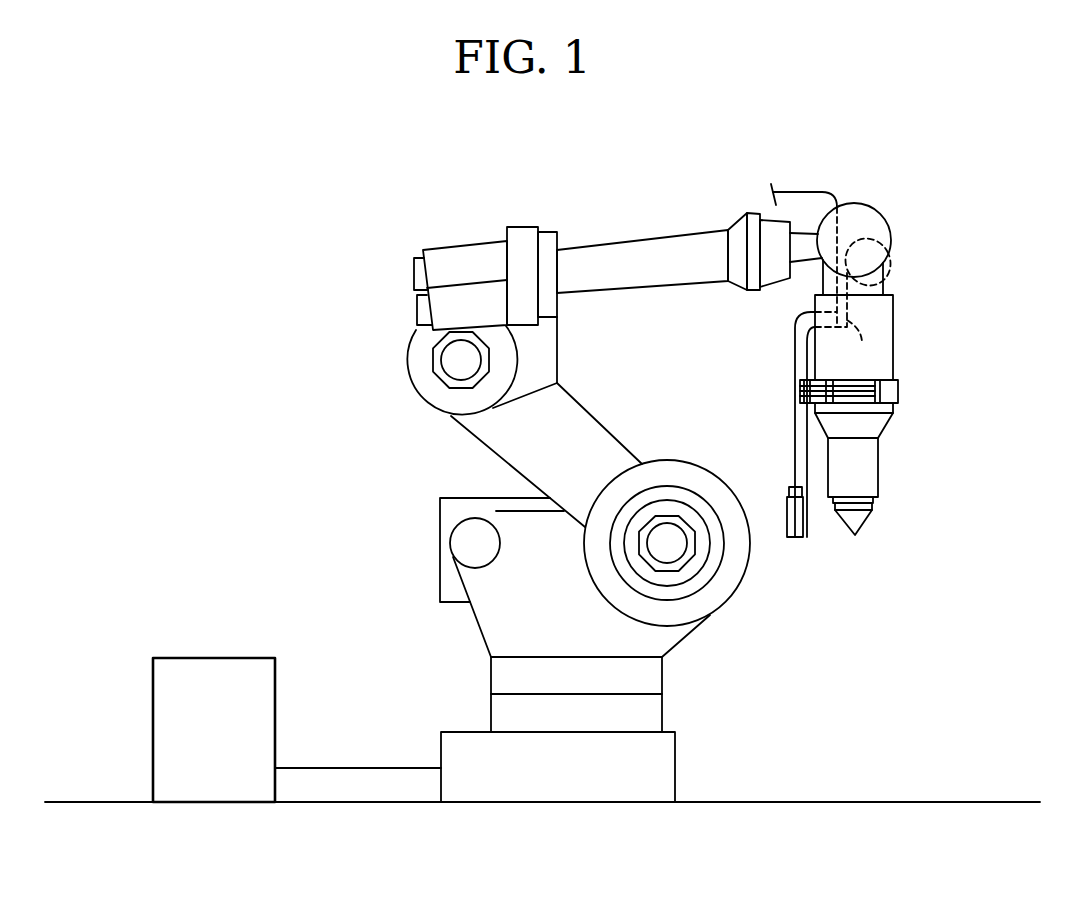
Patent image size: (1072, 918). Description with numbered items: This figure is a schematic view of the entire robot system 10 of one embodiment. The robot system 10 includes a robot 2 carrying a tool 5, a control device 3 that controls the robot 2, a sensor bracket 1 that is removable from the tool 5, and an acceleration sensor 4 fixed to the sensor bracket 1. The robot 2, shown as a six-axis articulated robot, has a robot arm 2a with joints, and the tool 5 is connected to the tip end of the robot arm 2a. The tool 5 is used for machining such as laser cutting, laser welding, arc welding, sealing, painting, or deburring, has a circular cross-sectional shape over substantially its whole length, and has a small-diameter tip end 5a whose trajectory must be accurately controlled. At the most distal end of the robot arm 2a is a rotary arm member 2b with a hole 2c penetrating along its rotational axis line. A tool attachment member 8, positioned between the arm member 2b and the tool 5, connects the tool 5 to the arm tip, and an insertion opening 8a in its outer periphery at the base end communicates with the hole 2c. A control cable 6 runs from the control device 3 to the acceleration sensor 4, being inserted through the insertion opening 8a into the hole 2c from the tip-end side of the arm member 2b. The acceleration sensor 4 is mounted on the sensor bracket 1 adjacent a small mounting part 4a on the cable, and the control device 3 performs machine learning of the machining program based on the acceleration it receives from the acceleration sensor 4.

The robot system 10 is at (250, 238).
The robot 2 is at (418, 215).
The robot arm 2a is at (640, 236).
The arm member 2b is at (885, 273).
The hole 2c is at (887, 240).
The sensor bracket 1 is at (918, 391).
The tool attachment member 8 is at (893, 330).
The insertion opening 8a is at (846, 293).
The control cable 6 is at (795, 345).
The tool 5 is at (878, 468).
The tip end 5a is at (855, 535).
The acceleration sensor 4 is at (786, 522).
The sensor mount 4a is at (790, 487).
The control device 3 is at (211, 657).